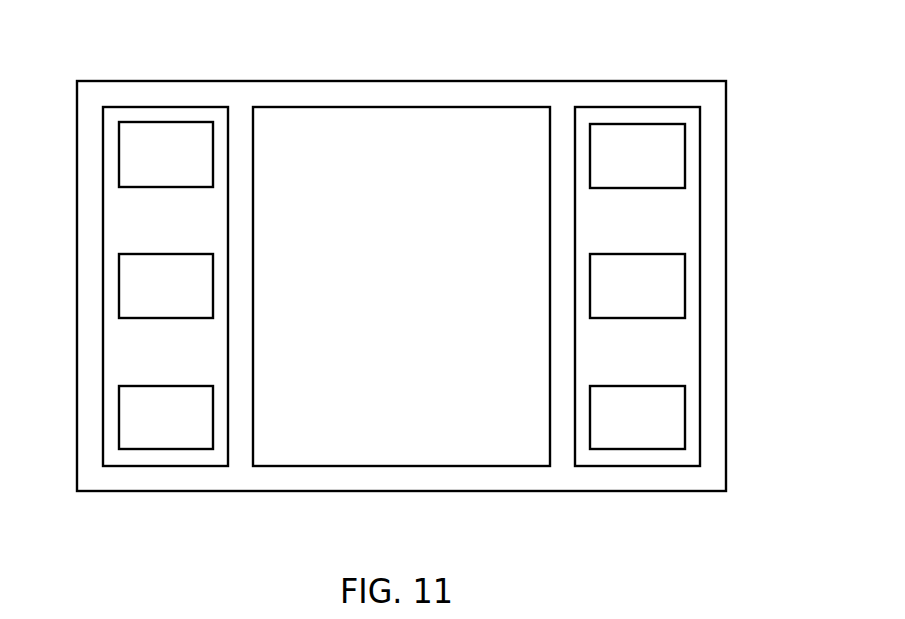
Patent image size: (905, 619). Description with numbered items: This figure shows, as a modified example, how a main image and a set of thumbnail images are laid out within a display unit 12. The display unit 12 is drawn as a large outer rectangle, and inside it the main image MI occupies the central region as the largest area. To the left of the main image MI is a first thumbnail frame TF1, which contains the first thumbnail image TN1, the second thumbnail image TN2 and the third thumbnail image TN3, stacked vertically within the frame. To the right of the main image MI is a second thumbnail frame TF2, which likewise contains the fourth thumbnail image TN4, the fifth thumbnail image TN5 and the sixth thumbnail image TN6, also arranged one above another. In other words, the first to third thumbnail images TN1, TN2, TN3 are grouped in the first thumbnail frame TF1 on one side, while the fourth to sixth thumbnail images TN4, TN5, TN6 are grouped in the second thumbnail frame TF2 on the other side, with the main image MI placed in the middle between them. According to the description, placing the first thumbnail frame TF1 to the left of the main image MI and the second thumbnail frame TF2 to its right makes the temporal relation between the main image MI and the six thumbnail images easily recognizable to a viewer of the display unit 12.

The display unit 12 is at (398, 492).
The first thumbnail frame TF1 is at (165, 106).
The second thumbnail frame TF2 is at (637, 107).
The main image MI is at (402, 107).
The first thumbnail image TN1 is at (118, 414).
The second thumbnail image TN2 is at (118, 283).
The third thumbnail image TN3 is at (118, 152).
The fourth thumbnail image TN4 is at (685, 155).
The fifth thumbnail image TN5 is at (685, 289).
The sixth thumbnail image TN6 is at (685, 418).